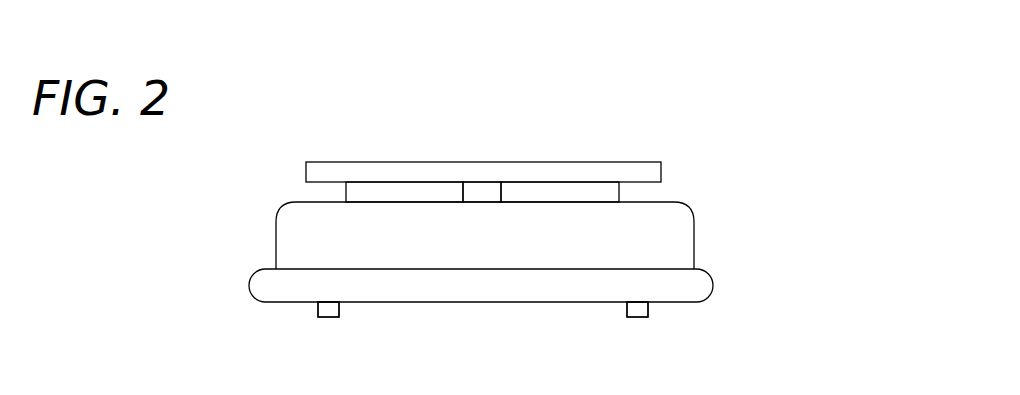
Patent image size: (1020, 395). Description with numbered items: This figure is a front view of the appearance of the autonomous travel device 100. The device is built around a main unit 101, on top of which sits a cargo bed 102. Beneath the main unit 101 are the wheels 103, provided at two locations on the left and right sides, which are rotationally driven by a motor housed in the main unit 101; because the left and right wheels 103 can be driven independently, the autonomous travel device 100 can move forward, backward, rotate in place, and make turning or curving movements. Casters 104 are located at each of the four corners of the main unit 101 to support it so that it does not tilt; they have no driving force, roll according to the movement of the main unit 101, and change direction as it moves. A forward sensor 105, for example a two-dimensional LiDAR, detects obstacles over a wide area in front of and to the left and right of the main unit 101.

The autonomous travel device 100 is at (766, 218).
The main unit 101 is at (242, 178).
The cargo bed 102 is at (439, 165).
The wheels 103 is at (483, 309).
The casters 104 is at (328, 317).
The forward sensor 105 is at (487, 192).